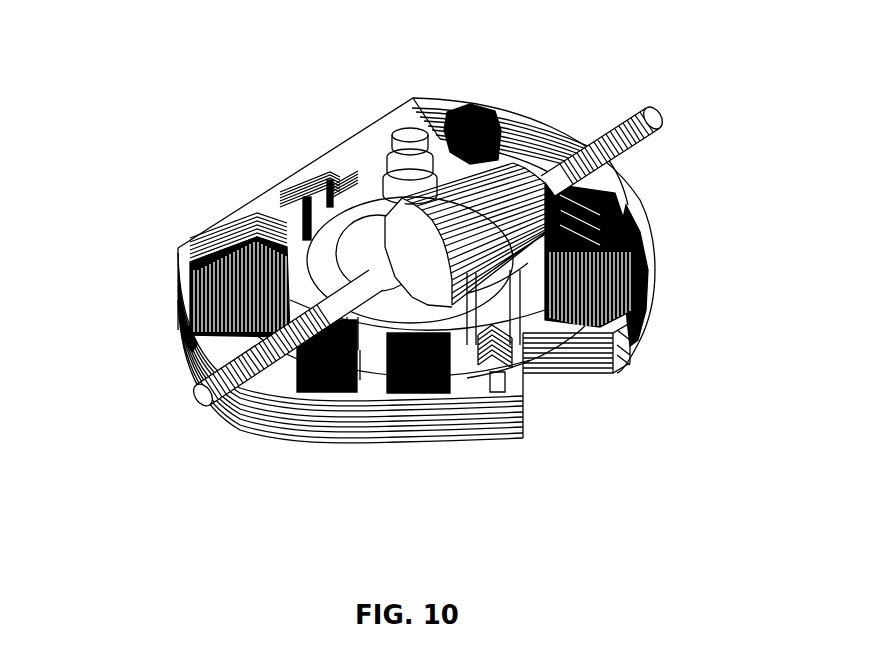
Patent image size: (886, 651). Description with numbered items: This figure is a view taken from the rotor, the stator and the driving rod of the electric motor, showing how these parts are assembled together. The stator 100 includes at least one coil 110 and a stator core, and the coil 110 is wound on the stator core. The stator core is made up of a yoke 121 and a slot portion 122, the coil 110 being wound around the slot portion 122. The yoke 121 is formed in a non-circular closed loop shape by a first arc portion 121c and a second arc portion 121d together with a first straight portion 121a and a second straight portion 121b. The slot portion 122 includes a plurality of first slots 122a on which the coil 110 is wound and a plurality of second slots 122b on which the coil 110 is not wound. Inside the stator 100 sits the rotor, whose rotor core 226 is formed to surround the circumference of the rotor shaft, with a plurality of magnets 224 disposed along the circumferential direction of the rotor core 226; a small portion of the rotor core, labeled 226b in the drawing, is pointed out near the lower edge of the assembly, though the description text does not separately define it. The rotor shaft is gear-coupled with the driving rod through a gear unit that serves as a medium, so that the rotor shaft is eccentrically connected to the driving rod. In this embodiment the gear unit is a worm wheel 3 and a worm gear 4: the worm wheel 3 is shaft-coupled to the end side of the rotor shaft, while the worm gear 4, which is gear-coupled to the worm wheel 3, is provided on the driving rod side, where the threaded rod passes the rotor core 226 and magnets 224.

The worm wheel 3 is at (385, 127).
The worm gear 4 is at (507, 167).
The stator 100 is at (453, 445).
The coil 110 is at (407, 380).
The yoke 121 is at (393, 213).
The first straight portion 121a is at (387, 120).
The second straight portion 121b is at (630, 358).
The first arc portion 121c is at (197, 330).
The second arc portion 121d is at (630, 207).
The slot portion 122 is at (460, 215).
The first slots 122a is at (287, 227).
The second slots 122b is at (333, 167).
The magnets 224 is at (365, 345).
The rotor core 226 is at (547, 357).
The coupling protrusion 226b is at (497, 380).